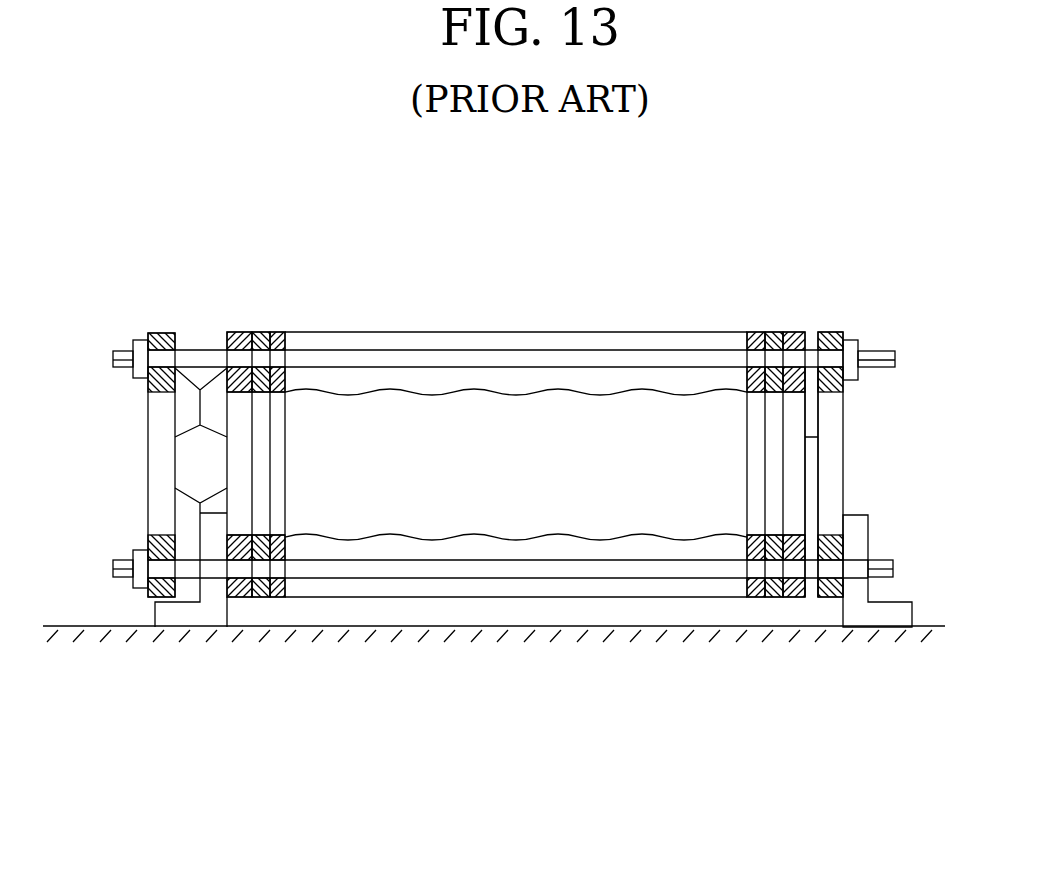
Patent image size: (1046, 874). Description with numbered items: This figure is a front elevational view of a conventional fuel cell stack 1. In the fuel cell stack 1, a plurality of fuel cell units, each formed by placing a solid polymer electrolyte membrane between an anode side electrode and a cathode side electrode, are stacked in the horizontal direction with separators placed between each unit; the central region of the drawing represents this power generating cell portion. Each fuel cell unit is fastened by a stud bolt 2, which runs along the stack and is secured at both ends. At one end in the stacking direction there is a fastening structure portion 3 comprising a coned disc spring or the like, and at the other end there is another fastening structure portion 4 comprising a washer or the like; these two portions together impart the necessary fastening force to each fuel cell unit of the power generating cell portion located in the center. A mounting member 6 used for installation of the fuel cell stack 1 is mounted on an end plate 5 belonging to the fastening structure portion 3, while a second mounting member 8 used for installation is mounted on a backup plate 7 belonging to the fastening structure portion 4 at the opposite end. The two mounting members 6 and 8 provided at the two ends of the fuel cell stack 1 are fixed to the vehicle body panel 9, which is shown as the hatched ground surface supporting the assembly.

The fuel cell stack 1 is at (528, 288).
The stud bolt 2 is at (123, 350).
The fastening structure portion 3 is at (203, 318).
The fastening structure portion 4 is at (815, 316).
The end plate 5 is at (239, 331).
The mounting member 6 is at (200, 617).
The backup plate 7 is at (828, 465).
The mounting member 8 is at (870, 613).
The vehicle body panel 9 is at (532, 628).